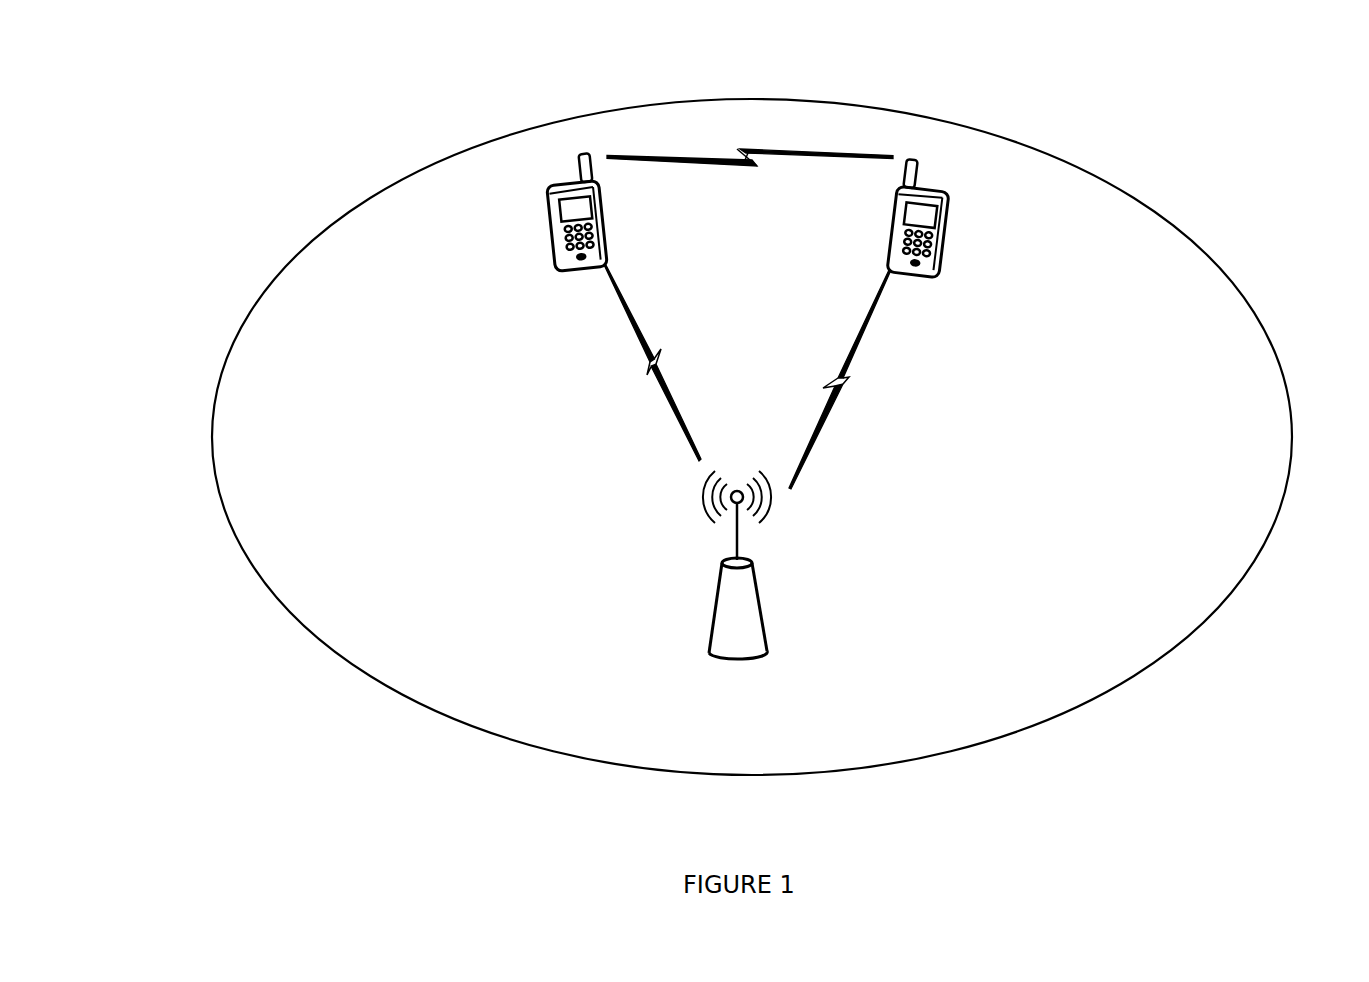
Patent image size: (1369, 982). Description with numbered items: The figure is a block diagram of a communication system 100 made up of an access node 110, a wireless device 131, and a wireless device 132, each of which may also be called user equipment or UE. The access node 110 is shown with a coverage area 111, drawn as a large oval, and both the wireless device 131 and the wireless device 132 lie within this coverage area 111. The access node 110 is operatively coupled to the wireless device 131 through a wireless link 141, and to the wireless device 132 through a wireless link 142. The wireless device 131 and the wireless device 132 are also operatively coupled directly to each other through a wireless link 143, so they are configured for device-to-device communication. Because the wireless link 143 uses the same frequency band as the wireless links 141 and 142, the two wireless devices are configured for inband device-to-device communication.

The communication system 100 is at (180, 53).
The coverage area 111 is at (392, 243).
The access node 110 is at (722, 651).
The wireless device 132 is at (560, 266).
The wireless device 131 is at (946, 272).
The wireless link 142 is at (648, 362).
The wireless link 141 is at (848, 378).
The wireless link 143 is at (768, 150).